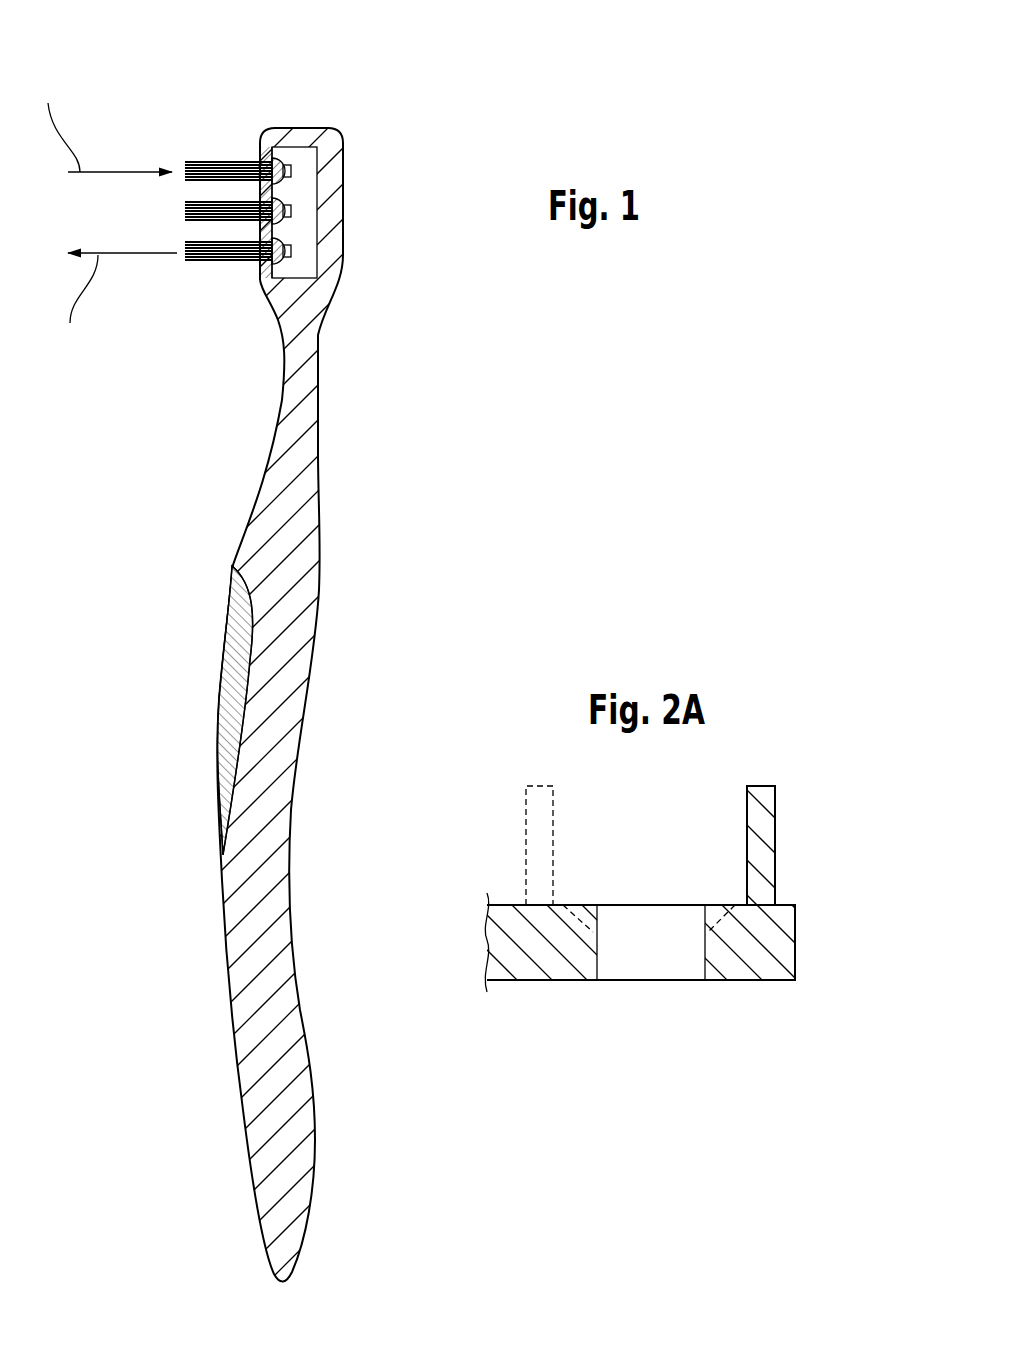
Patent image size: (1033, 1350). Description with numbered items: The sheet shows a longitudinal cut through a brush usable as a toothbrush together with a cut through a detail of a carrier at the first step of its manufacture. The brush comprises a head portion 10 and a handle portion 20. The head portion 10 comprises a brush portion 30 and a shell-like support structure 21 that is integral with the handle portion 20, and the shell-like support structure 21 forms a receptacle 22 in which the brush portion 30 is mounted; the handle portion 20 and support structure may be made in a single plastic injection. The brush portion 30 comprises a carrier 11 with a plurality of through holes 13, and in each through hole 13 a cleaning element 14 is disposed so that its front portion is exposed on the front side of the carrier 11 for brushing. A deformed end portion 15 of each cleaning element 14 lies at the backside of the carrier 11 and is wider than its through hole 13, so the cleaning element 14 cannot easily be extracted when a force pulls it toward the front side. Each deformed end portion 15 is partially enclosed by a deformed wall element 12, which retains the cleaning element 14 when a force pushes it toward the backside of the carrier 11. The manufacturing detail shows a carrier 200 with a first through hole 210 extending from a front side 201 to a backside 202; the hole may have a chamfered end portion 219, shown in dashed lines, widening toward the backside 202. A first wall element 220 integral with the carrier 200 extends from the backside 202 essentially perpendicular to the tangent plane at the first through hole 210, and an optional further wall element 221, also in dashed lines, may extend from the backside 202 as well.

In FIG. 1, the head portion 10 is at (306, 116).
In FIG. 1, the carrier 11 is at (263, 275).
In FIG. 1, the deformed wall element 12 is at (280, 165).
In FIG. 1, the through hole 13 is at (260, 162).
In FIG. 1, the cleaning element 14 is at (203, 160).
In FIG. 1, the deformed end portion 15 is at (284, 158).
In FIG. 1, the handle portion 20 is at (198, 974).
In FIG. 1, the shell-like support structure 21 is at (332, 188).
In FIG. 1, the receptacle 22 is at (320, 260).
In FIG. 1, the brush portion 30 is at (228, 279).
In FIG. 2A, the carrier 200 is at (521, 988).
In FIG. 2A, the front side 201 is at (753, 982).
In FIG. 2A, the backside 202 is at (503, 903).
In FIG. 2A, the first through hole 210 is at (663, 996).
In FIG. 2A, the chamfered end portion 219 is at (720, 905).
In FIG. 2A, the first wall element 220 is at (777, 815).
In FIG. 2A, the further wall element 221 is at (525, 800).